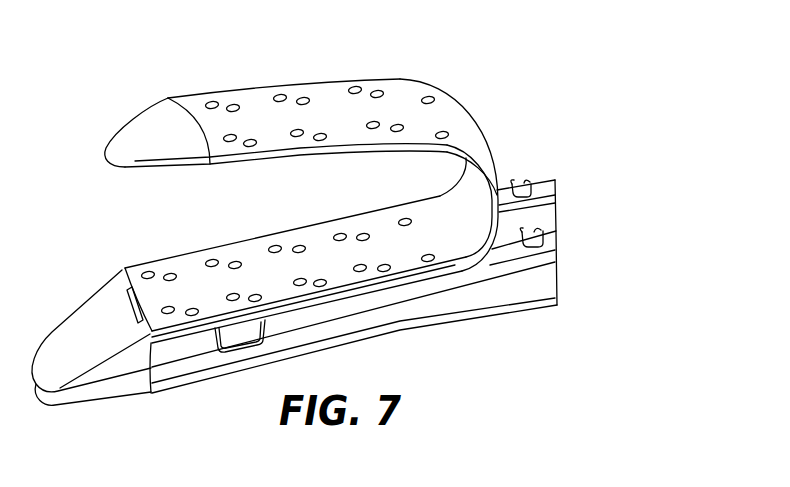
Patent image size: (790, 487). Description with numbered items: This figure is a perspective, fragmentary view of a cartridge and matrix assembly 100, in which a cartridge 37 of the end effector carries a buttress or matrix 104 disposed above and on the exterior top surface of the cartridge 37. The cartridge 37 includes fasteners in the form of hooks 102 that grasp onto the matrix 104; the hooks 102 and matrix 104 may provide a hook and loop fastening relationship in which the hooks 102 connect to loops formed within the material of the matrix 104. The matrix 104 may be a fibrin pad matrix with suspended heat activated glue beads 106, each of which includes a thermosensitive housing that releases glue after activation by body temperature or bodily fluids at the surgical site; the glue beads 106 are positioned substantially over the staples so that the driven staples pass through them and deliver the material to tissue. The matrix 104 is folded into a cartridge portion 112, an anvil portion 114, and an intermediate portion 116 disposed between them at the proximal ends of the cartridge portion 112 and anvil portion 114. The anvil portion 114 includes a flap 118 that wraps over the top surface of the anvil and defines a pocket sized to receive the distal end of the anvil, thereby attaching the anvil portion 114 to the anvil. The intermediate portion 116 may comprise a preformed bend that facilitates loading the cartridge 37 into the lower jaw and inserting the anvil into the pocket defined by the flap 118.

The cartridge and matrix assembly 100 is at (563, 62).
The matrix 104 is at (437, 84).
The glue beads 106 is at (371, 122).
The cartridge portion 112 is at (127, 258).
The anvil portion 114 is at (195, 90).
The intermediate portion 116 is at (488, 154).
The flap 118 is at (137, 137).
The hooks 102 is at (528, 180).
The cartridge 37 is at (192, 393).